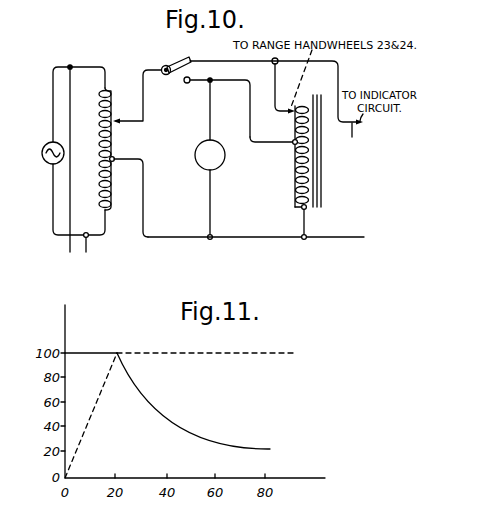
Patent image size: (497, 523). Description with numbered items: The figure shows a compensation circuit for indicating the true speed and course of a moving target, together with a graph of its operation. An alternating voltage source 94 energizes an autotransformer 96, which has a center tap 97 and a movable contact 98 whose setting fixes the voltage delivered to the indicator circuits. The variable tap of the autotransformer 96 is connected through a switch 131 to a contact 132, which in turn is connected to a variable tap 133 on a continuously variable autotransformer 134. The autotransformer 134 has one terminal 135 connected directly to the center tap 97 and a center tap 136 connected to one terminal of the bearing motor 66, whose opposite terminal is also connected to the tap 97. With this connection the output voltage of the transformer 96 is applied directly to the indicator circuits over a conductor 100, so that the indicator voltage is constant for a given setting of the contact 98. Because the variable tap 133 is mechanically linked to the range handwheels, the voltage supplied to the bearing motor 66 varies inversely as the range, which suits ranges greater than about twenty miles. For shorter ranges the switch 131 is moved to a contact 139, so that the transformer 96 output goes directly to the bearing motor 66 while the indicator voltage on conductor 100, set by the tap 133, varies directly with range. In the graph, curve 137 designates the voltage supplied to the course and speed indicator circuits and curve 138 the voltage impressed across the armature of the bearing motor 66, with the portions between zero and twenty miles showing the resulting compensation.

In FIG. 10, the alternating voltage source 94 is at (44, 147).
In FIG. 10, the autotransformer 96 is at (110, 88).
In FIG. 10, the movable contact 98 is at (136, 122).
In FIG. 10, the center tap 97 is at (144, 158).
In FIG. 10, the bearing motor 66 is at (221, 165).
In FIG. 10, the contact 139 is at (187, 83).
In FIG. 10, the switch 131 is at (173, 63).
In FIG. 10, the contact 132 is at (192, 58).
In FIG. 10, the variable tap 133 is at (290, 105).
In FIG. 10, the continuously variable autotransformer 134 is at (325, 90).
In FIG. 10, the center tap 136 is at (283, 146).
In FIG. 10, the terminal 135 is at (307, 210).
In FIG. 10, the conductor 100 is at (355, 139).
In FIG. 11, the curve 137 is at (173, 353).
In FIG. 11, the curve 138 is at (187, 428).